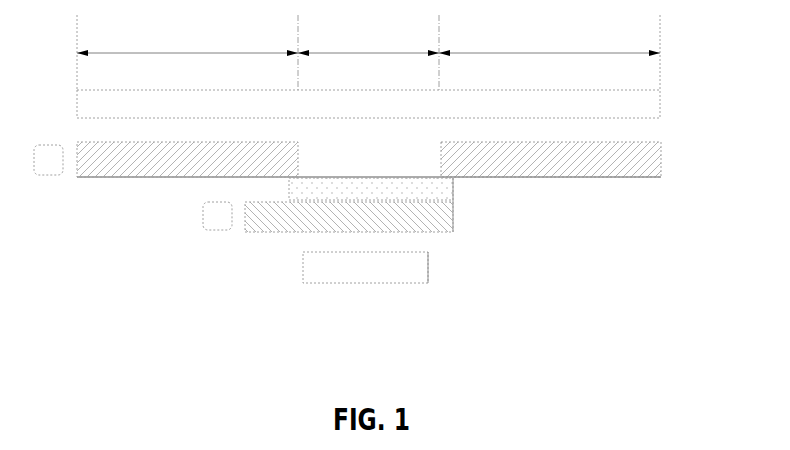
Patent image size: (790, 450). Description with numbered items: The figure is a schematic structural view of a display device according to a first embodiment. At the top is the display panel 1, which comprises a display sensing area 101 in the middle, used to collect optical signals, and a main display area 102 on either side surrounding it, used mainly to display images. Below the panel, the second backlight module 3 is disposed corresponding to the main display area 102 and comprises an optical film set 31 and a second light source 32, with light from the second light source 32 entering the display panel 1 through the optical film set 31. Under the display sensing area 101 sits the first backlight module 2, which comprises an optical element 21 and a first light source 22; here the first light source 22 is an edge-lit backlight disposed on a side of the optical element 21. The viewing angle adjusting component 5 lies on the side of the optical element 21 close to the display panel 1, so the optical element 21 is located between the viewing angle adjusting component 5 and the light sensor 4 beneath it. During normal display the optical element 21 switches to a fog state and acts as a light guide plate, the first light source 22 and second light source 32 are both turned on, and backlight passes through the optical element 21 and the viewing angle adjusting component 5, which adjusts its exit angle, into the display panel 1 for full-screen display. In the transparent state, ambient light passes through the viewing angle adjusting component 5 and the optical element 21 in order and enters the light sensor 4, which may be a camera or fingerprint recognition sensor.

The display panel 1 is at (648, 113).
The display sensing area 101 is at (368, 35).
The main display area 102 is at (368, 35).
The first backlight module 2 is at (324, 285).
The optical element 21 is at (275, 220).
The first light source 22 is at (217, 217).
The second backlight module 3 is at (344, 226).
The optical film set 31 is at (110, 160).
The second light source 32 is at (46, 160).
The light sensor 4 is at (420, 272).
The viewing angle adjusting component 5 is at (330, 183).